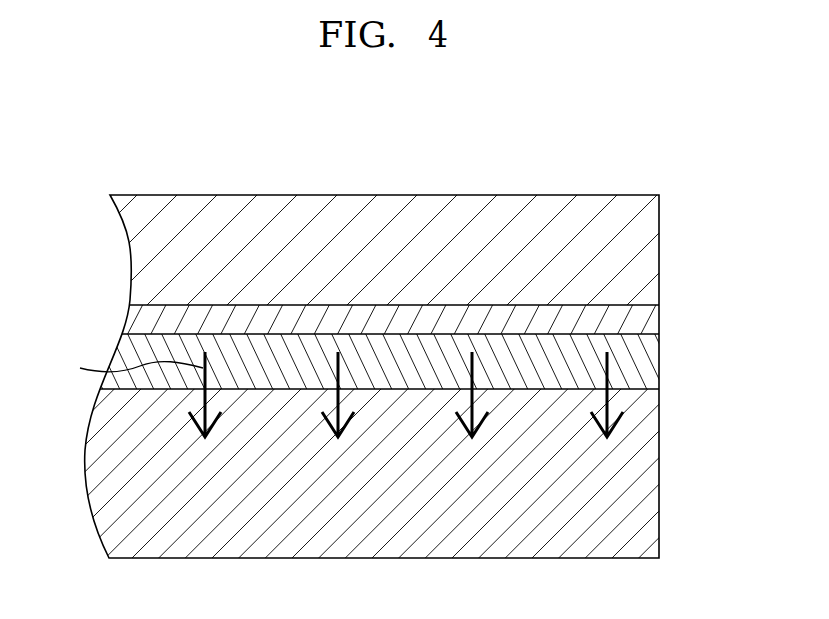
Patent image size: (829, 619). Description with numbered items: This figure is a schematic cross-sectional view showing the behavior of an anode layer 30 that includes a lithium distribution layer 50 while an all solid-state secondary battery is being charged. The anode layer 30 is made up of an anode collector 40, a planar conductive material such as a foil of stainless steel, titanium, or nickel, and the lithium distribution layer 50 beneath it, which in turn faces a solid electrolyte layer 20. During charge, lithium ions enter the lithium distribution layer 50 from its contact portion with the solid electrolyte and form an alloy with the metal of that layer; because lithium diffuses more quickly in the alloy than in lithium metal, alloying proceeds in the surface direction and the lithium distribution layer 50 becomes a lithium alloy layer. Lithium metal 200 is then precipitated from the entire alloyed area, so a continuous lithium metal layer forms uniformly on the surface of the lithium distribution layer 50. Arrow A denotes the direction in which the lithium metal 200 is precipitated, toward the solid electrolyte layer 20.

The anode layer 30 is at (72, 206).
The anode collector 40 is at (645, 252).
The lithium distribution layer 50 is at (645, 323).
The lithium metal 200 is at (645, 367).
The solid electrolyte layer 20 is at (642, 475).
The arrow A is at (129, 367).